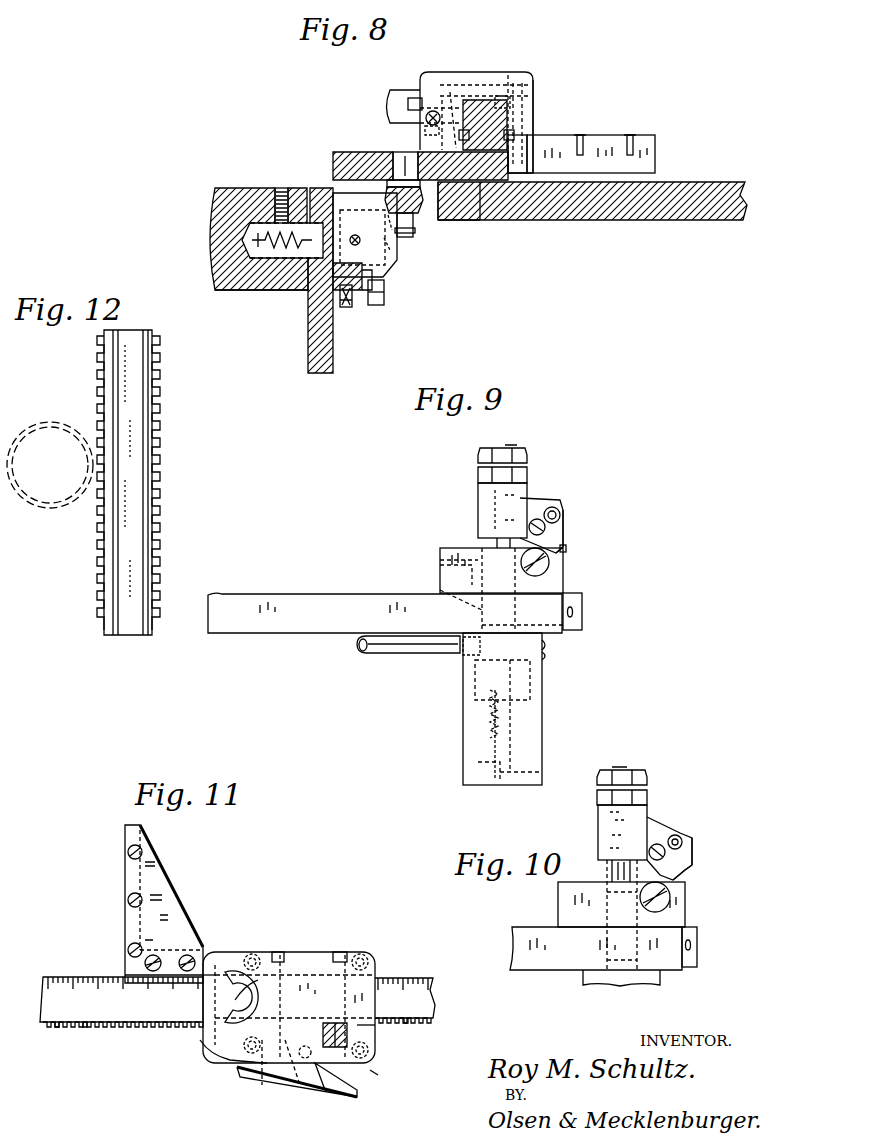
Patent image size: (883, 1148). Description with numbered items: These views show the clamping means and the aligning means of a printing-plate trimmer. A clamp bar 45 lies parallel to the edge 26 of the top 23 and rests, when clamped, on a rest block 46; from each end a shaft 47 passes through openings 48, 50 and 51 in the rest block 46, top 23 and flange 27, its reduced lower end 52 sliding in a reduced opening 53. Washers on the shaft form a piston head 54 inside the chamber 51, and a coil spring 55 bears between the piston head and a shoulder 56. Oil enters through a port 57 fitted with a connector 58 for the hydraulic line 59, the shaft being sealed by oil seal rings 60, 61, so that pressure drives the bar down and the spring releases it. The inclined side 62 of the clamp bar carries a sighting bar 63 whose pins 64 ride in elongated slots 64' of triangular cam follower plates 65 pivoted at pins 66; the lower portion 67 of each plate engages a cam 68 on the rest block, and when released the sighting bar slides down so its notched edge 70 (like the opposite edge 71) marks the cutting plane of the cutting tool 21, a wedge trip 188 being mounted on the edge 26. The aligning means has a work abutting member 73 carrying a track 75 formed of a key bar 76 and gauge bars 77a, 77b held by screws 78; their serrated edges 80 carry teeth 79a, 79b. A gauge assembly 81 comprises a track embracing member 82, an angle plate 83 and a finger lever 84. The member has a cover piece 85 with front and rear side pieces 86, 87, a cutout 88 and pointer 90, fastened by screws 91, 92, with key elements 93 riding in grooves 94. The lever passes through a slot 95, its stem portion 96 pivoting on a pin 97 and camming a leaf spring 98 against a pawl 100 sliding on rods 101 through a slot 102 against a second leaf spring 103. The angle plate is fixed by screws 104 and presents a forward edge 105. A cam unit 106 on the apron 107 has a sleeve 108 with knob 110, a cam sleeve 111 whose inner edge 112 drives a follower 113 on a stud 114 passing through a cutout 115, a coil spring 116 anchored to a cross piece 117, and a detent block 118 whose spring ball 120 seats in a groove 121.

In FIG. 12, the cutting tool 21 is at (40, 422).
In FIG. 8, the top 23 is at (696, 218).
In FIG. 9, the top 23 is at (312, 592).
In FIG. 10, the top 23 is at (540, 930).
In FIG. 9, the edge 26 is at (583, 602).
In FIG. 10, the edge 26 is at (698, 935).
In FIG. 9, the flange 27 is at (545, 752).
In FIG. 9, the clamp bar 45 is at (478, 517).
In FIG. 10, the clamp bar 45 is at (598, 831).
In FIG. 9, the rest block 46 is at (556, 570).
In FIG. 10, the rest block 46 is at (580, 888).
In FIG. 9, the shaft 47 is at (510, 447).
In FIG. 10, the shaft 47 is at (622, 769).
In FIG. 9, the opening 48 is at (440, 566).
In FIG. 9, the opening 50 is at (440, 590).
In FIG. 9, the opening or chamber 51 is at (462, 660).
In FIG. 9, the lower end of shaft 52 is at (478, 762).
In FIG. 9, the reduced opening 53 is at (545, 773).
In FIG. 9, the piston head 54 is at (544, 689).
In FIG. 9, the coil spring 55 is at (520, 716).
In FIG. 9, the shoulder 56 is at (478, 738).
In FIG. 9, the fluid inlet and outlet port 57 is at (546, 652).
In FIG. 9, the connector 58 is at (438, 652).
In FIG. 9, the hydraulic line 59 is at (400, 652).
In FIG. 9, the oil seal ring 60 is at (470, 550).
In FIG. 9, the oil seal ring 61 is at (567, 626).
In FIG. 9, the side 62 is at (535, 497).
In FIG. 10, the side 62 is at (650, 822).
In FIG. 9, the sighting bar 63 is at (566, 527).
In FIG. 10, the sighting bar 63 is at (694, 845).
In FIG. 12, the sighting bar 63 is at (135, 385).
In FIG. 9, the pin 64 is at (570, 509).
In FIG. 10, the pin 64 is at (686, 823).
In FIG. 9, the elongated slot 64' is at (568, 500).
In FIG. 10, the elongated slot 64' is at (687, 812).
In FIG. 9, the cam follower plate 65 is at (566, 540).
In FIG. 10, the cam follower plate 65 is at (690, 875).
In FIG. 9, the pin 66 is at (530, 525).
In FIG. 9, the lower portion of plate 67 is at (567, 549).
In FIG. 9, the cam 68 is at (548, 568).
In FIG. 10, the cam 68 is at (672, 900).
In FIG. 10, the edge 70 is at (694, 862).
In FIG. 12, the edge 70 is at (97, 538).
In FIG. 12, the edge 71 is at (160, 515).
In FIG. 8, the work abutting member 73 is at (340, 162).
In FIG. 8, the track 75 is at (513, 78).
In FIG. 11, the track 75 is at (62, 980).
In FIG. 8, the key bar 76 is at (492, 216).
In FIG. 8, the upper gauge bar 77a is at (530, 110).
In FIG. 11, the upper gauge bar 77a is at (402, 978).
In FIG. 8, the lower gauge bar 77b is at (528, 126).
In FIG. 8, the screws 78 is at (472, 218).
In FIG. 11, the teeth 79a is at (72, 1026).
In FIG. 11, the teeth 79b is at (88, 1027).
In FIG. 11, the elongated edge 80 is at (396, 1024).
In FIG. 11, the gauge assembly 81 is at (170, 865).
In FIG. 11, the track embracing member 82 is at (305, 960).
In FIG. 8, the angle plate 83 is at (655, 140).
In FIG. 11, the angle plate 83 is at (165, 895).
In FIG. 8, the finger lever 84 is at (387, 110).
In FIG. 11, the finger lever 84 is at (315, 1085).
In FIG. 11, the cover piece 85 is at (235, 958).
In FIG. 8, the front side piece 86 is at (425, 118).
In FIG. 11, the front side piece 86 is at (222, 990).
In FIG. 8, the rear side piece 87 is at (584, 138).
In FIG. 11, the cutout 88 is at (215, 1005).
In FIG. 11, the pointer 90 is at (130, 975).
In FIG. 11, the screws 91 is at (240, 1067).
In FIG. 11, the screws 92 is at (255, 955).
In FIG. 8, the key elements 93 is at (458, 135).
In FIG. 8, the grooves 94 is at (425, 131).
In FIG. 11, the slot 95 is at (285, 1060).
In FIG. 8, the stem portion 96 is at (413, 98).
In FIG. 11, the stem portion 96 is at (340, 1050).
In FIG. 11, the pin 97 is at (312, 1072).
In FIG. 8, the leaf spring 98 is at (436, 72).
In FIG. 11, the leaf spring 98 is at (262, 1060).
In FIG. 8, the pawl 100 is at (505, 95).
In FIG. 11, the pawl 100 is at (372, 1040).
In FIG. 11, the parallel rods 101 is at (282, 950).
In FIG. 8, the slot 102 is at (455, 92).
In FIG. 11, the slot 102 is at (225, 1047).
In FIG. 8, the second leaf spring 103 is at (478, 98).
In FIG. 11, the screws 104 is at (172, 955).
In FIG. 11, the forward edge 105 is at (125, 862).
In FIG. 8, the adjustable cam unit 106 is at (210, 185).
In FIG. 8, the apron 107 is at (318, 372).
In FIG. 8, the sleeve 108 is at (280, 290).
In FIG. 8, the knob 110 is at (222, 290).
In FIG. 8, the cam sleeve 111 is at (380, 283).
In FIG. 8, the inner edge 112 is at (397, 262).
In FIG. 8, the follower 113 is at (420, 208).
In FIG. 8, the stud 114 is at (412, 236).
In FIG. 8, the cutout 115 is at (442, 222).
In FIG. 8, the coil spring 116 is at (272, 205).
In FIG. 8, the cross piece 117 is at (265, 240).
In FIG. 8, the detent block 118 is at (374, 306).
In FIG. 8, the spring ball 120 is at (348, 310).
In FIG. 8, the longitudinal groove 121 is at (372, 293).
In FIG. 9, the wedge trip 188 is at (582, 612).
In FIG. 10, the wedge trip 188 is at (697, 962).